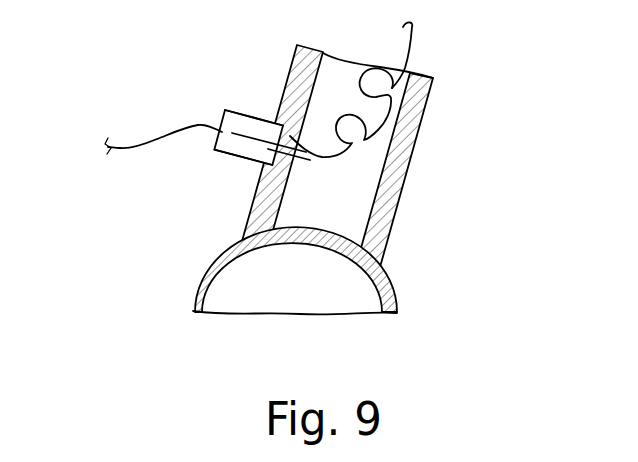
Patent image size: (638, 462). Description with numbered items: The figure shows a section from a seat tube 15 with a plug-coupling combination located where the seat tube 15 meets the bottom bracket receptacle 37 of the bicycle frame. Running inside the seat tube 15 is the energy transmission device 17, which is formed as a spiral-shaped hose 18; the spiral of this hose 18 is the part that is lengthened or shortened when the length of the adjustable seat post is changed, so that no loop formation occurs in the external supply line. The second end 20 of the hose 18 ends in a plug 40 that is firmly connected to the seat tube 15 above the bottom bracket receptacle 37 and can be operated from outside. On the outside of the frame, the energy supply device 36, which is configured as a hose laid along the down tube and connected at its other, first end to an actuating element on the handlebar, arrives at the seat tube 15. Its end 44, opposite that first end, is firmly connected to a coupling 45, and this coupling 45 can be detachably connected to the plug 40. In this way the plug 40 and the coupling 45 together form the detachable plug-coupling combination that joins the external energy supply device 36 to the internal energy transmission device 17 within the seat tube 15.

The seat tube 15 is at (405, 183).
The energy transmission device 17 is at (412, 26).
The spiral-shaped hose 18 is at (433, 78).
The second end of the hose 20 is at (310, 152).
The energy supply device 36 is at (130, 149).
The bottom bracket receptacle 37 is at (198, 300).
The plug 40 is at (253, 138).
The end of the energy supply device 44 is at (222, 132).
The coupling 45 is at (224, 153).